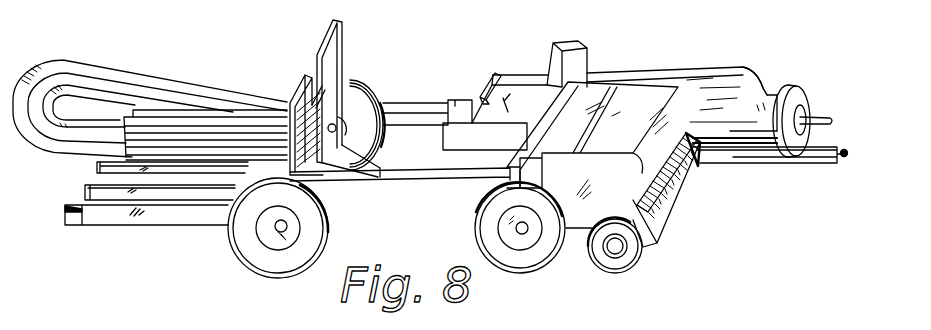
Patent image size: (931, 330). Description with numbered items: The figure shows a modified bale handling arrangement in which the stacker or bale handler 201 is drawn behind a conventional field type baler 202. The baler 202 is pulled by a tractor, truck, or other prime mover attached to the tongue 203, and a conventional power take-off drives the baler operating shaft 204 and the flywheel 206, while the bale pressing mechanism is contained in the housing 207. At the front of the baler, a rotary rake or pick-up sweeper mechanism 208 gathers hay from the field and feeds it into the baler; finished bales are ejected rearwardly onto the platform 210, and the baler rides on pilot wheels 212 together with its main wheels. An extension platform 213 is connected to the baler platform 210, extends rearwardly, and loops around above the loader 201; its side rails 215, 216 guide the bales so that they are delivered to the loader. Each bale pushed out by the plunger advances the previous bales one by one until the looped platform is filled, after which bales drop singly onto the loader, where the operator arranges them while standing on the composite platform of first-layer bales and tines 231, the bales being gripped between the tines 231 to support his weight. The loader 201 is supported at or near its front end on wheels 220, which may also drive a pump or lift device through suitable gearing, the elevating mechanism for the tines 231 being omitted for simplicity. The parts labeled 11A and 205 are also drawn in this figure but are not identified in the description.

The lower frame bar 11A is at (110, 198).
The bale handler 201 is at (240, 77).
The field type baler 202 is at (636, 61).
The tongue 203 is at (760, 160).
The baler operating shaft 204 is at (822, 118).
The front wheel 205 is at (487, 215).
The flywheel 206 is at (797, 102).
The housing 207 is at (757, 77).
The pick-up sweeper mechanism 208 is at (640, 170).
The platform 210 is at (460, 115).
The pilot wheels 212 is at (637, 265).
The extension platform 213 is at (400, 112).
The side rail 215 is at (152, 76).
The side rail 216 is at (107, 93).
The wheels 220 is at (350, 84).
The tines 231 is at (84, 190).